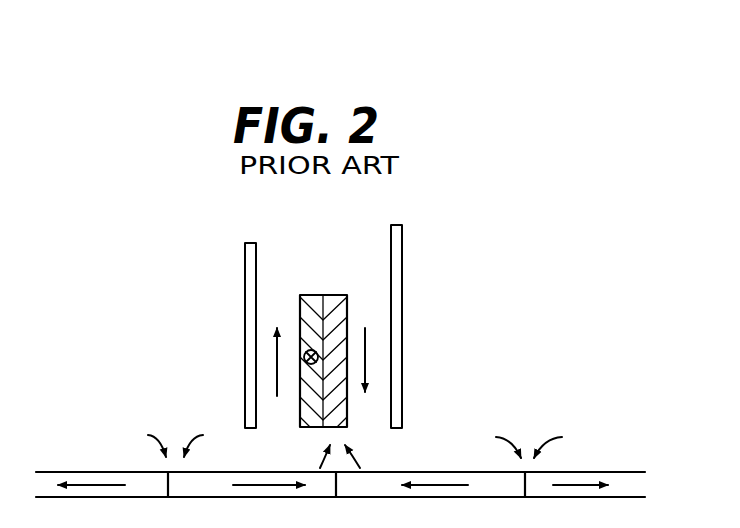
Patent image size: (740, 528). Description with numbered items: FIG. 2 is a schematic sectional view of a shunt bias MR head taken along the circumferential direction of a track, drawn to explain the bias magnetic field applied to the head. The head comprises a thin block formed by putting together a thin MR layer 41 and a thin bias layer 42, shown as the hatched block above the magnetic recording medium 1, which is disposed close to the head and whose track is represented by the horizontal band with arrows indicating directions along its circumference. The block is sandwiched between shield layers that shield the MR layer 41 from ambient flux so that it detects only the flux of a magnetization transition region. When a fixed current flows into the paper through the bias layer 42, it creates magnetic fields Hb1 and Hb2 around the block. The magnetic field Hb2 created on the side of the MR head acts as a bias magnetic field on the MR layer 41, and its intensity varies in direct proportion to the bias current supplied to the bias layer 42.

The magnetic recording medium 1 is at (630, 471).
The MR layer 41 is at (338, 295).
The bias layer 42 is at (312, 295).
The magnetic field Hb1 is at (283, 330).
The bias magnetic field Hb2 is at (361, 450).